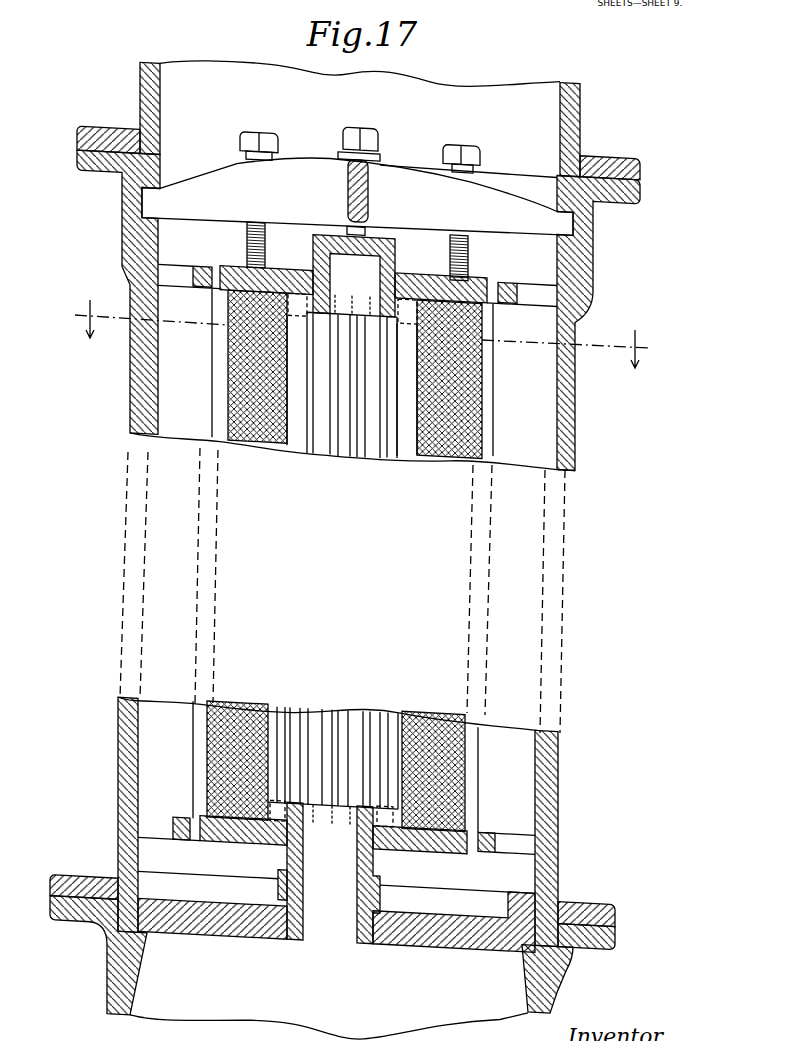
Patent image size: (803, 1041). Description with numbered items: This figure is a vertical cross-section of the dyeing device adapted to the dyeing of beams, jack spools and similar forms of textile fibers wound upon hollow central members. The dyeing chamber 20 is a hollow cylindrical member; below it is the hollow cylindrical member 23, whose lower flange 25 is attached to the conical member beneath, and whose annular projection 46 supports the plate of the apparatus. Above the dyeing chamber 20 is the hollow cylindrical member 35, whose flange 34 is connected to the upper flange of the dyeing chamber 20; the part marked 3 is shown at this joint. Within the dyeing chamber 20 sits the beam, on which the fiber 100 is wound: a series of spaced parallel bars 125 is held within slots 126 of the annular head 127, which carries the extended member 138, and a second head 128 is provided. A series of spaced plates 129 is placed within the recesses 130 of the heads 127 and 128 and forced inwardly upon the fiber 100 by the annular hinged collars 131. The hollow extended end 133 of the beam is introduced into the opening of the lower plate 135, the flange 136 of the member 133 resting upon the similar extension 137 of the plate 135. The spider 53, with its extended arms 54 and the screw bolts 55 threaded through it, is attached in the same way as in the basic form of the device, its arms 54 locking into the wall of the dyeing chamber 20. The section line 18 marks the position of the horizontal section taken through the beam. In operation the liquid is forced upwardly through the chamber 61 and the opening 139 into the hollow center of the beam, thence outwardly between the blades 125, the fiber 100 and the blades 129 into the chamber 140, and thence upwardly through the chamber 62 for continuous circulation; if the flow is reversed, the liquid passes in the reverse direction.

The housing body 3 is at (625, 198).
The section line 18- 18 is at (363, 334).
The dyeing chamber 20 is at (557, 523).
The hollow cylindrical member 23 is at (522, 975).
The lower flange 25 is at (596, 904).
The flange 34 is at (597, 166).
The hollow cylindrical member 35 is at (575, 111).
The annular projection 46 is at (145, 936).
The spider 53 is at (290, 178).
The extended arms 54 is at (142, 203).
The screw bolts 55 is at (257, 133).
The chamber 61 is at (329, 1009).
The chamber 62 is at (360, 90).
The fiber 100 is at (258, 446).
The bars 125 is at (400, 438).
The slots 126 is at (405, 308).
The annular head 127 is at (280, 274).
The head 128 is at (440, 840).
The plates 129 is at (215, 374).
The recesses 130 is at (223, 268).
The annular hinged collars 131 is at (504, 290).
The hollow extended end 133 is at (294, 933).
The lower plate 135 is at (222, 926).
The flange 136 is at (286, 871).
The extension 137 is at (286, 887).
The extended member 138 is at (372, 243).
The opening 139 is at (347, 875).
The chamber 140 is at (520, 434).